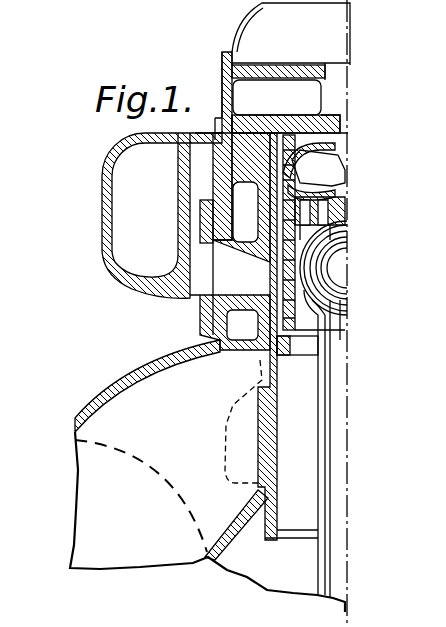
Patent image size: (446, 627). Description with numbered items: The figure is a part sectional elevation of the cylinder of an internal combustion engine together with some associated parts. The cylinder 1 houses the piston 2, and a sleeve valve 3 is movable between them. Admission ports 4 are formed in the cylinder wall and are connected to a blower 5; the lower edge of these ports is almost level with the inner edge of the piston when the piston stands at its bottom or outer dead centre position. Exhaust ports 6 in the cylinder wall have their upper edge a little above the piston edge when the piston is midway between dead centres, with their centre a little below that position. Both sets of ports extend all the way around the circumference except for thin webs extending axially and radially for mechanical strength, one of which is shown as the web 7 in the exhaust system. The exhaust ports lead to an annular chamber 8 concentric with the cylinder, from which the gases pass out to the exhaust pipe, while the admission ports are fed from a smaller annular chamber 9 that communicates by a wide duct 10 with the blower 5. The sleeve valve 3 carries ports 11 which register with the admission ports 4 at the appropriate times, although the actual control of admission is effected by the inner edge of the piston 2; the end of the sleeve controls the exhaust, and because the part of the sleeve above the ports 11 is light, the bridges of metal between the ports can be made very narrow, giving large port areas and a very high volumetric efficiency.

The cylinder 1 is at (212, 316).
The piston 2 is at (282, 237).
The sleeve valve 3 is at (276, 368).
The admission ports 4 is at (260, 373).
The blower 5 is at (142, 449).
The exhaust ports 6 is at (268, 271).
The web 7 is at (213, 268).
The annular chamber 8 is at (162, 215).
The smaller annular chamber 9 is at (223, 473).
The wide duct 10 is at (207, 476).
The ports 11 is at (292, 313).